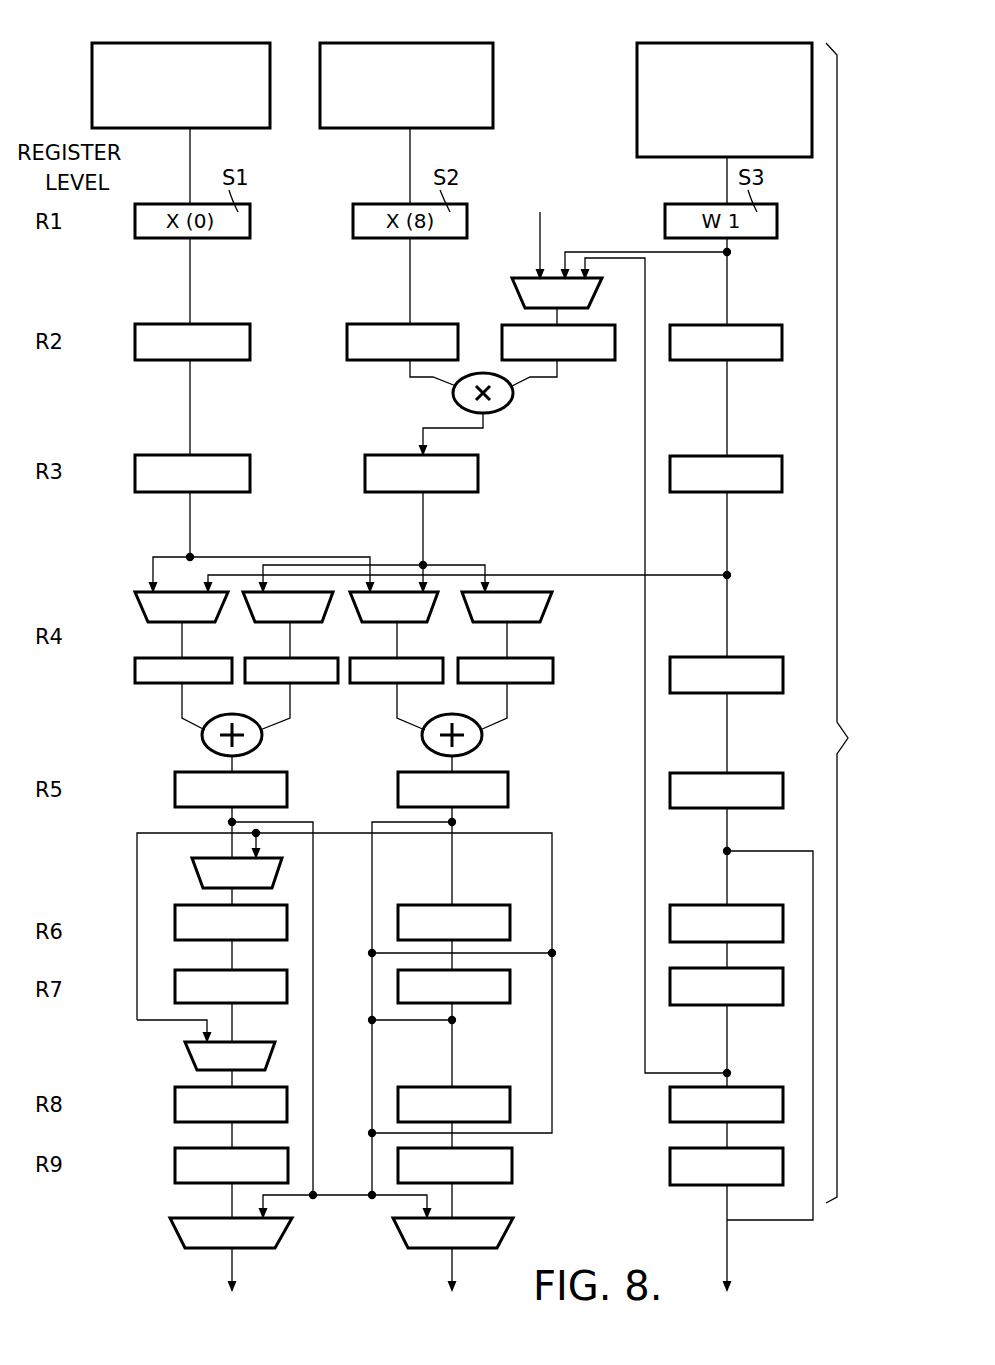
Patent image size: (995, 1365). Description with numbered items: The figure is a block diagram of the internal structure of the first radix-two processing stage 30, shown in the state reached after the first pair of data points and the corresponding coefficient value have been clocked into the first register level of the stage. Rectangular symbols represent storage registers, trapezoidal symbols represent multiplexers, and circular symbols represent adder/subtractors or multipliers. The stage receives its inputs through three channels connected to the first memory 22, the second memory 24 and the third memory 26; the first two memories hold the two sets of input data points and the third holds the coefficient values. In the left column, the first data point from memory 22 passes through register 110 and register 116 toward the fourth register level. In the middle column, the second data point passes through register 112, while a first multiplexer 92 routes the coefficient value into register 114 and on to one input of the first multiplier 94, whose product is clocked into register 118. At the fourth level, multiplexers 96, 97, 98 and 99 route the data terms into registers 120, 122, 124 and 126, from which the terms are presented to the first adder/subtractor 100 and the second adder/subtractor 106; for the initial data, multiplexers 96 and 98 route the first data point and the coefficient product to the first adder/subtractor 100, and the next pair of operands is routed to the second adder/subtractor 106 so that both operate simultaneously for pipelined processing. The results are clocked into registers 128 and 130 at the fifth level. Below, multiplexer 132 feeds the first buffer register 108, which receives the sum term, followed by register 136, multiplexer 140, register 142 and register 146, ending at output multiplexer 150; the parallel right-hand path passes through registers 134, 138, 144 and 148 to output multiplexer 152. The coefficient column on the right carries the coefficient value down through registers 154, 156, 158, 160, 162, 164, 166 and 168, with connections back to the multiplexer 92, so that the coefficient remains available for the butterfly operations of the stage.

The first memory 22 is at (231, 43).
The second memory 24 is at (457, 43).
The third memory 26 is at (756, 43).
The first radix 2 processing stage 30 is at (855, 623).
The first multiplexer 92 is at (592, 290).
The first multiplier 94 is at (508, 402).
The multiplexer 96 is at (200, 625).
The multiplexer 97 is at (433, 620).
The multiplexer 98 is at (303, 623).
The multiplexer 99 is at (550, 620).
The first adder/subtractor 100 is at (255, 748).
The second adder/subtractor 106 is at (475, 748).
The first buffer register 108 is at (178, 920).
The shift register 110 is at (228, 322).
The shift register 112 is at (443, 322).
The shift register 114 is at (600, 353).
The register 116 is at (220, 452).
The shift register 118 is at (382, 452).
The shift register 120 is at (145, 675).
The shift register 122 is at (322, 680).
The shift register 124 is at (367, 680).
The shift register 126 is at (533, 683).
The shift register 128 is at (290, 790).
The shift register 130 is at (510, 788).
The multiplexer 132 is at (203, 873).
The shift register 134 is at (485, 913).
The shift register 136 is at (175, 985).
The shift register 138 is at (493, 1008).
The multiplexer 140 is at (198, 1055).
The register 142 is at (175, 1102).
The shift register 144 is at (497, 1087).
The shift register 146 is at (178, 1168).
The shift register 148 is at (505, 1167).
The multiplexer 150 is at (187, 1230).
The multiplexer 152 is at (507, 1222).
The shift register 154 is at (760, 328).
The shift register 156 is at (765, 465).
The shift register 158 is at (762, 665).
The shift register 160 is at (763, 783).
The shift register 162 is at (762, 912).
The shift register 164 is at (762, 995).
The shift register 166 is at (760, 1092).
The shift register 168 is at (675, 1185).